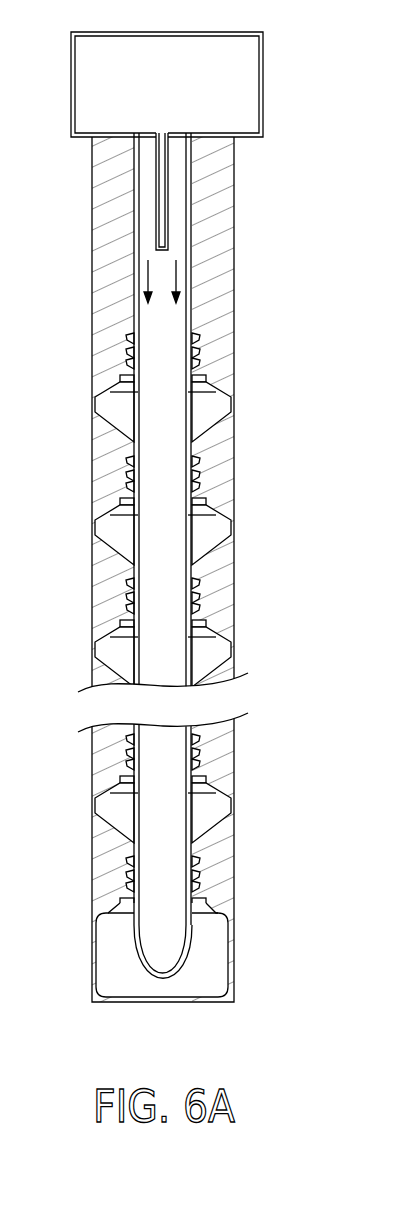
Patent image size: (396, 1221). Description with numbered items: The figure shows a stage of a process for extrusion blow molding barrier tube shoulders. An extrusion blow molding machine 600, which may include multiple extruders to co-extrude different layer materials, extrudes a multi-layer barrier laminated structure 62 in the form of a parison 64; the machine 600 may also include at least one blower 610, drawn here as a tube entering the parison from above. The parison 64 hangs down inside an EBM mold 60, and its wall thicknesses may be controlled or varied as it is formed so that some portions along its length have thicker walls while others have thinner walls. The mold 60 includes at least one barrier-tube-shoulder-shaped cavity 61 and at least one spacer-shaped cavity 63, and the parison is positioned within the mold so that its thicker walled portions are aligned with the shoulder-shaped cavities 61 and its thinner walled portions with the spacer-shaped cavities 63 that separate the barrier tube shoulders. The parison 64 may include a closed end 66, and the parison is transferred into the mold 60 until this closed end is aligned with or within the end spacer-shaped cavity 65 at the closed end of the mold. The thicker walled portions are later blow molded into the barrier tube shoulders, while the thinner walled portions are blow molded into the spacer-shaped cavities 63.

The extrusion blow molding machine 600 is at (228, 50).
The blower 610 is at (168, 168).
The multi-layer barrier laminated structure 62 is at (134, 167).
The barrier-tube-shoulder-shaped cavity 61 is at (73, 332).
The spacer-shaped cavity 63 is at (73, 392).
The EBM mold 60 is at (246, 410).
The end spacer-shaped cavity 65 is at (90, 913).
The parison 64 is at (202, 955).
The closed end 66 is at (150, 1022).